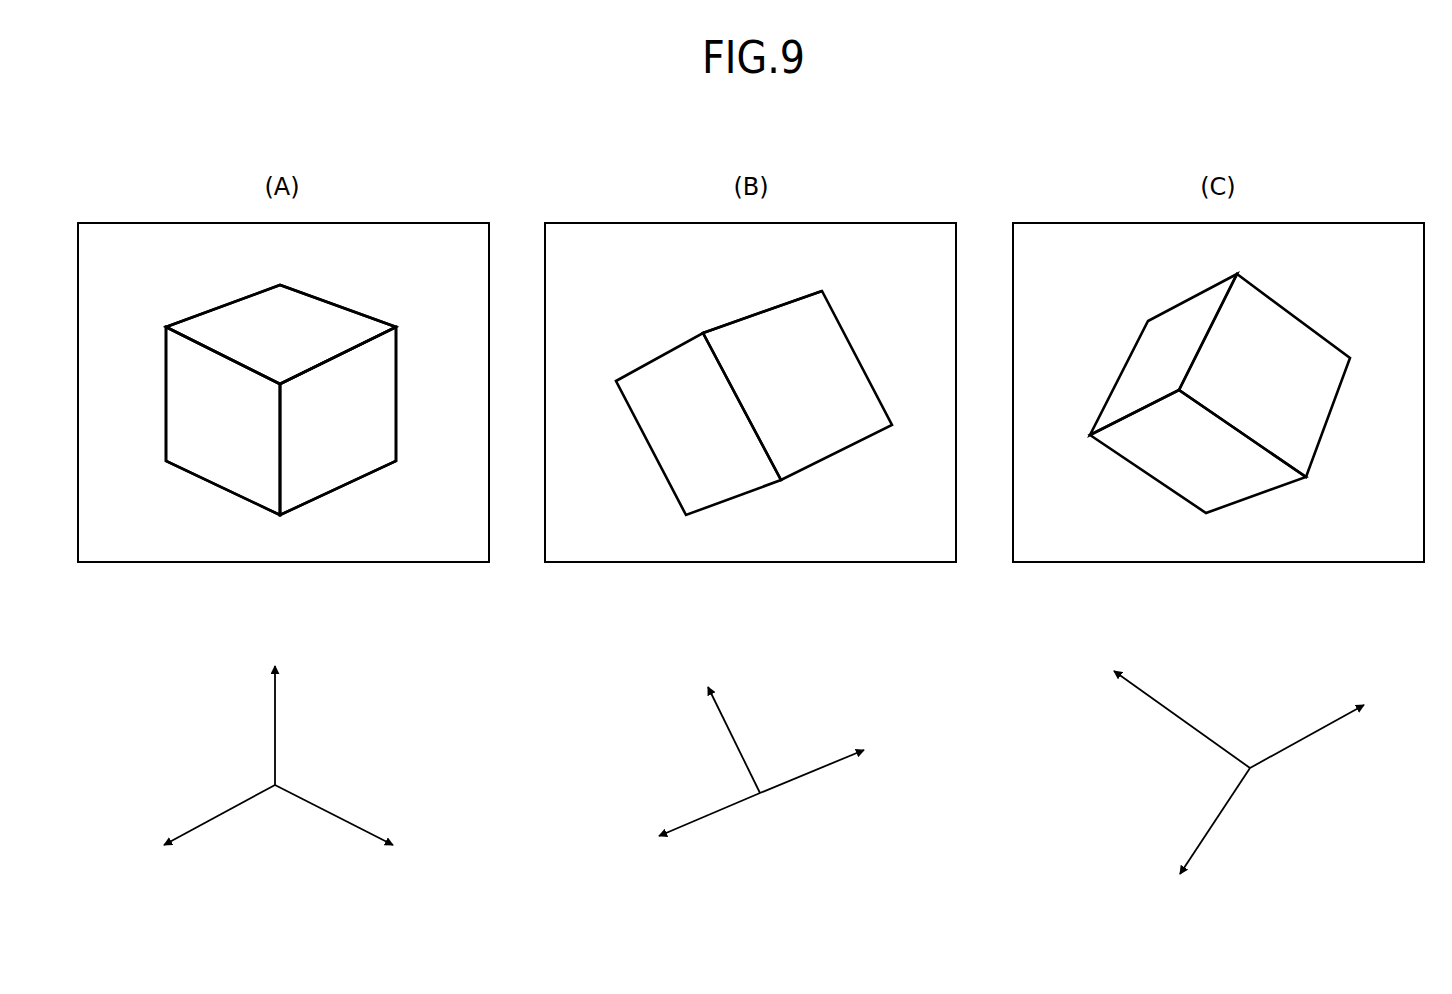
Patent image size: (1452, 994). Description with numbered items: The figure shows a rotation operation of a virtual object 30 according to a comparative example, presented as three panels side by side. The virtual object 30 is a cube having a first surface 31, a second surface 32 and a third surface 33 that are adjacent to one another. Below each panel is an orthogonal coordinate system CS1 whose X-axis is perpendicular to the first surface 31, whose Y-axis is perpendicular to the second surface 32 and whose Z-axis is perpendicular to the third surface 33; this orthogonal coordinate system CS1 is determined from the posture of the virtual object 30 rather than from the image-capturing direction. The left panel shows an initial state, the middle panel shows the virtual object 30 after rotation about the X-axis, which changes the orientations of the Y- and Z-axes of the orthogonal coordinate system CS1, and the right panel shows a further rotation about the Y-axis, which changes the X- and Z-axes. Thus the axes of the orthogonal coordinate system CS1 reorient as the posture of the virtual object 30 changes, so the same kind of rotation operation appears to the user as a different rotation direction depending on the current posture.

The virtual object 30 is at (342, 304).
The first surface 31 is at (206, 435).
The second surface 32 is at (344, 435).
The third surface 33 is at (215, 323).
The orthogonal coordinate system CS1 is at (343, 744).